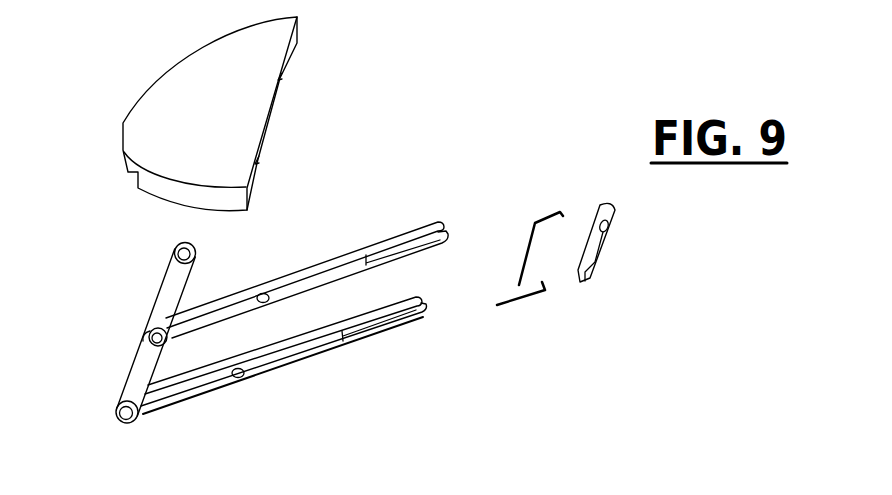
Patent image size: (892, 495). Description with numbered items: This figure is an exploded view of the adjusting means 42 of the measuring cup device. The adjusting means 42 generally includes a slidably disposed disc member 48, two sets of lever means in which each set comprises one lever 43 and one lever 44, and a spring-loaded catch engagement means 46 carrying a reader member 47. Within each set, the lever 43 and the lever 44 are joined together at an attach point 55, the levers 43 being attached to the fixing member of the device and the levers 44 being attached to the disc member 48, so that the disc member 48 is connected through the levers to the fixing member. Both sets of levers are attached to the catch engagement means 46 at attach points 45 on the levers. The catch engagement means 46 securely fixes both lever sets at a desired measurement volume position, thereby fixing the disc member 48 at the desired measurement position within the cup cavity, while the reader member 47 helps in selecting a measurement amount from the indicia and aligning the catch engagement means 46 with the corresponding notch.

The adjusting means 42 is at (398, 96).
The lever 43 is at (303, 345).
The lever 44 is at (150, 355).
The attach point 45 is at (435, 250).
The catch engagement means 46 is at (512, 278).
The reader member 47 is at (585, 280).
The disc member 48 is at (198, 142).
The attach point 55 is at (130, 400).